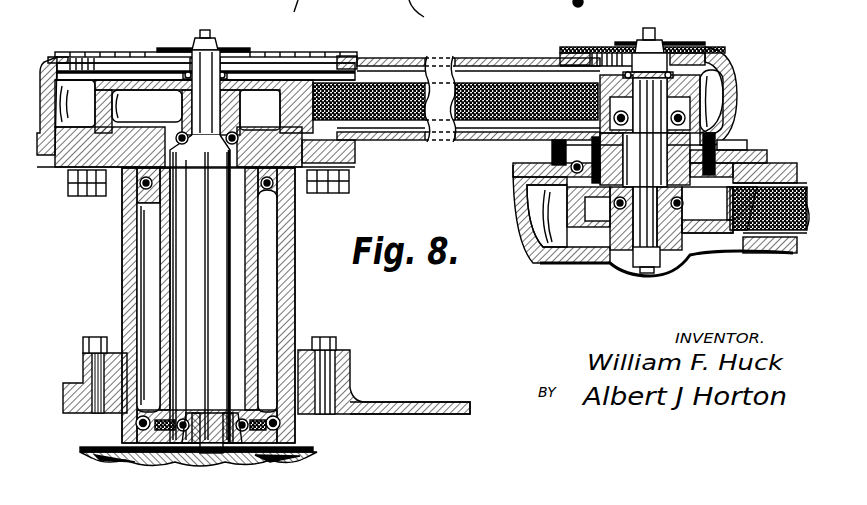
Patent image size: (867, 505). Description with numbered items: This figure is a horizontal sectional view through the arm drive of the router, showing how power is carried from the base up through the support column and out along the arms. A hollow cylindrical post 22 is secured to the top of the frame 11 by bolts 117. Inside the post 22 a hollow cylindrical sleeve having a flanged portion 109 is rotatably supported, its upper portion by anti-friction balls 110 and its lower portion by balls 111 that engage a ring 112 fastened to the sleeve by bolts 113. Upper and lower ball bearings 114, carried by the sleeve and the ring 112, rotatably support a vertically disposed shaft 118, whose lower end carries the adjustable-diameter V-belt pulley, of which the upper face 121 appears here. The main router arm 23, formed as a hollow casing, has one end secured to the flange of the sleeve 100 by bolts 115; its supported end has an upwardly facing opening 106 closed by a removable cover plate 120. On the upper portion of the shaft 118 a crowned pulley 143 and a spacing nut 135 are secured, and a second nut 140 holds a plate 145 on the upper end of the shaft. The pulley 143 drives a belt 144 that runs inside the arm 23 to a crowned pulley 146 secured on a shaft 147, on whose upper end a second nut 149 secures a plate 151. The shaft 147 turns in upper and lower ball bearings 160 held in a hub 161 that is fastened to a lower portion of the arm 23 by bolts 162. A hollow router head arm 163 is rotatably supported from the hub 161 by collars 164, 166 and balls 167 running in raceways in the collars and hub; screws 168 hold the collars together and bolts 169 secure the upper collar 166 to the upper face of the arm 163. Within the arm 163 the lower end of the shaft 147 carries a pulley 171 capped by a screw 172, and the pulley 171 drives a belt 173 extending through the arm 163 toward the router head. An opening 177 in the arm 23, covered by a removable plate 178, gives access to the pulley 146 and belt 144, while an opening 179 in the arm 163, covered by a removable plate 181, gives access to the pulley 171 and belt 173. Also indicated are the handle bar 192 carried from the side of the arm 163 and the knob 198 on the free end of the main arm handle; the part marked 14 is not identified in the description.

The frame 11 is at (392, 404).
The frame 14 is at (299, 16).
The hollow cylindrical post 22 is at (122, 278).
The main router arm 23 is at (359, 60).
The sleeve 100 is at (247, 233).
The upwardly facing opening 106 is at (98, 46).
The flanged portion 109 is at (350, 170).
The balls 110 is at (124, 192).
The balls 111 is at (160, 423).
The ring 112 is at (170, 438).
The bolts 113 is at (296, 440).
The upper and lower ball bearings 114 is at (173, 124).
The bolts 115 is at (75, 190).
The bolts 117 is at (338, 344).
The vertically disposed shaft 118 is at (245, 258).
The removable cover plate 120 is at (130, 52).
The upper face 121 is at (86, 456).
The spacing nut 135 is at (222, 62).
The second nut 140 is at (208, 40).
The crowned pulley 143 is at (296, 78).
The belt 144 is at (385, 90).
The plate 145 is at (170, 48).
The crowned pulley 146 is at (707, 80).
The shaft 147 is at (700, 100).
The second nut 149 is at (654, 40).
The plate 151 is at (614, 47).
The upper and lower ball bearings 160 is at (703, 137).
The hub 161 is at (614, 168).
The bolts 162 is at (703, 148).
The hollow router head arm 163 is at (778, 253).
The collar 164 is at (750, 233).
The upper collar 166 is at (551, 163).
The balls 167 is at (724, 199).
The screws 168 is at (526, 182).
The bolts 169 is at (745, 157).
The pulley 171 is at (576, 238).
The screw 172 is at (647, 270).
The belt 173 is at (740, 233).
The opening 177 is at (722, 60).
The removable plate 178 is at (685, 58).
The opening 179 is at (563, 263).
The removable plate 181 is at (610, 268).
The handle bar 192 is at (428, 19).
The knob 198 is at (594, 20).